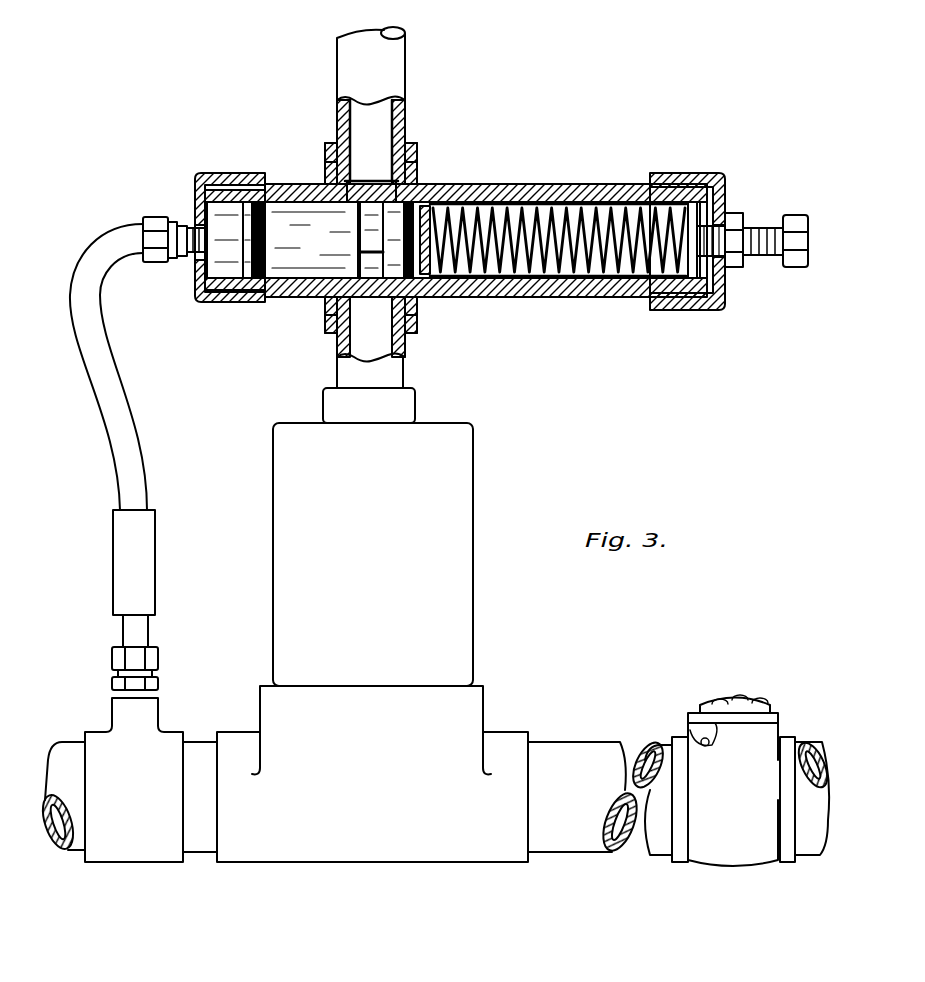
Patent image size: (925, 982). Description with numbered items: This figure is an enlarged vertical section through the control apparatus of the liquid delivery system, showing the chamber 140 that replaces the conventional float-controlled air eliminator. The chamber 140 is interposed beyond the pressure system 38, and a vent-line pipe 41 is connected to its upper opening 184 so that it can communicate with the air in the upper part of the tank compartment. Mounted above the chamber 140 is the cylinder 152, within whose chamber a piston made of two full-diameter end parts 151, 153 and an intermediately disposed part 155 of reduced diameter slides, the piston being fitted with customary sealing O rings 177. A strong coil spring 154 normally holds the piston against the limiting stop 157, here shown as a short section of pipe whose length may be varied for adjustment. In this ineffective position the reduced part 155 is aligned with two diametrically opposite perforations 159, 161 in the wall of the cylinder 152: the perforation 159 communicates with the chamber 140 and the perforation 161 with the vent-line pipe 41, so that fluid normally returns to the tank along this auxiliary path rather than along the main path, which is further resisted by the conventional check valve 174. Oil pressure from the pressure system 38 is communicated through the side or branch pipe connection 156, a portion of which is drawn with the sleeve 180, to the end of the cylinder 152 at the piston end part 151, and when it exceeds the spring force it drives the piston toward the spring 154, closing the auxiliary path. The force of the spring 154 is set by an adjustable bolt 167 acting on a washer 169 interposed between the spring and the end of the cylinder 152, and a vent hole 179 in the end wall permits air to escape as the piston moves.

The pressure system 38 is at (70, 757).
The vent-line pipe 41 is at (403, 48).
The chamber 140 is at (458, 497).
The piston end part 151 is at (290, 222).
The cylinder 152 is at (520, 186).
The piston end part 153 is at (398, 212).
The coil spring 154 is at (583, 268).
The intermediately disposed part of reduced diameter 155 is at (370, 228).
The side or branch pipe connection 156 is at (130, 404).
The limiting stop 157 is at (238, 176).
The perforation 159 is at (330, 318).
The perforation 161 is at (368, 200).
The adjustable bolt 167 is at (797, 268).
The washer 169 is at (698, 213).
The check valve 174 is at (743, 846).
The sealing O rings 177 is at (266, 198).
The vent hole 179 is at (706, 229).
The hose sleeve 180 is at (153, 563).
The upper opening 184 is at (400, 408).